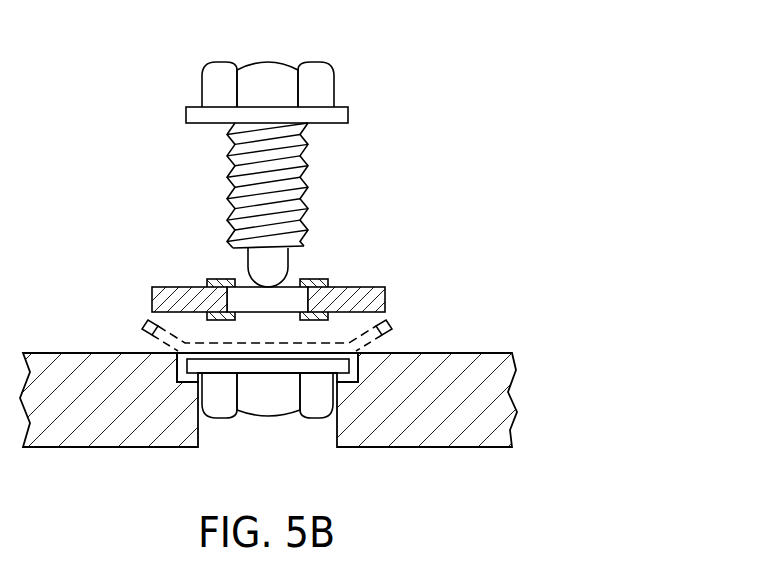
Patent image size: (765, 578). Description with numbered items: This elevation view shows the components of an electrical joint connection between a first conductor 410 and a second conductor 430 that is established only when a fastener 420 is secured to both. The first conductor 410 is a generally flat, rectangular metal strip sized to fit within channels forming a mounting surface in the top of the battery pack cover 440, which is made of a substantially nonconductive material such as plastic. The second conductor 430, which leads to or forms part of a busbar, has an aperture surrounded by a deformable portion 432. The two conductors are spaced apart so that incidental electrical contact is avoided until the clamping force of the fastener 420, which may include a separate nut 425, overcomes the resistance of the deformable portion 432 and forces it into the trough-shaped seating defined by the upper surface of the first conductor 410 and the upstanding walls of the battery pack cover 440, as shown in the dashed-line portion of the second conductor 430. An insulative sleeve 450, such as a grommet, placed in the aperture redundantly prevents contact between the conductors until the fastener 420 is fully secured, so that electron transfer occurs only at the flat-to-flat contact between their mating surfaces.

The first conductor 410 is at (197, 368).
The fastener 420 is at (334, 84).
The nut 425 is at (267, 408).
The second conductor 430 is at (384, 302).
The deformable portion 432 is at (143, 323).
The battery pack cover 440 is at (497, 393).
The insulative sleeve 450 is at (210, 279).